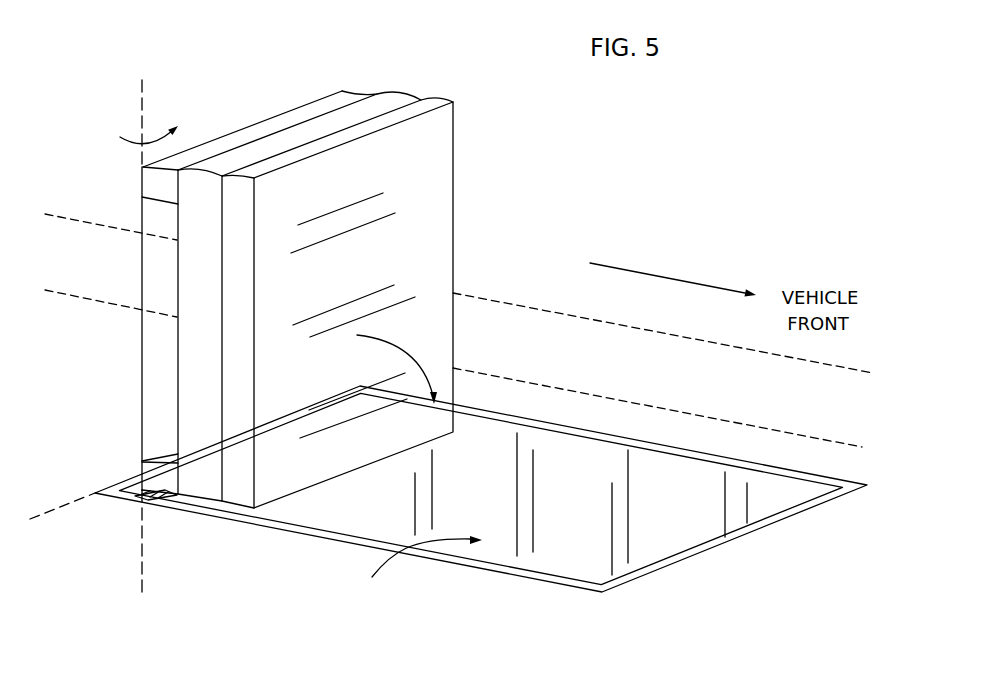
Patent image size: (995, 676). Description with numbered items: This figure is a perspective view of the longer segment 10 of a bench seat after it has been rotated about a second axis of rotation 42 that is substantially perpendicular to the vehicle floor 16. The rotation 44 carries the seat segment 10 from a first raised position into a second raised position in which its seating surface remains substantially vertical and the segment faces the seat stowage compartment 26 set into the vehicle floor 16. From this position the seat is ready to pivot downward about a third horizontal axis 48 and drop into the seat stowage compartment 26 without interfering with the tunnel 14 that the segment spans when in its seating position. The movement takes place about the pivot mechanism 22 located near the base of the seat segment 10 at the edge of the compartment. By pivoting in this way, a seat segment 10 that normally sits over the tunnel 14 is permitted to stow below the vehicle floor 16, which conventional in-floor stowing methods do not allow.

The longer segment 10 is at (335, 275).
The tunnel 14 is at (595, 372).
The vehicle floor 16 is at (802, 568).
The pivot mechanism 22 is at (160, 502).
The seat stowage compartment 26 is at (418, 568).
The second axis of rotation 42 is at (189, 318).
The rotation 44 is at (134, 148).
The third horizontal axis 48 is at (64, 512).